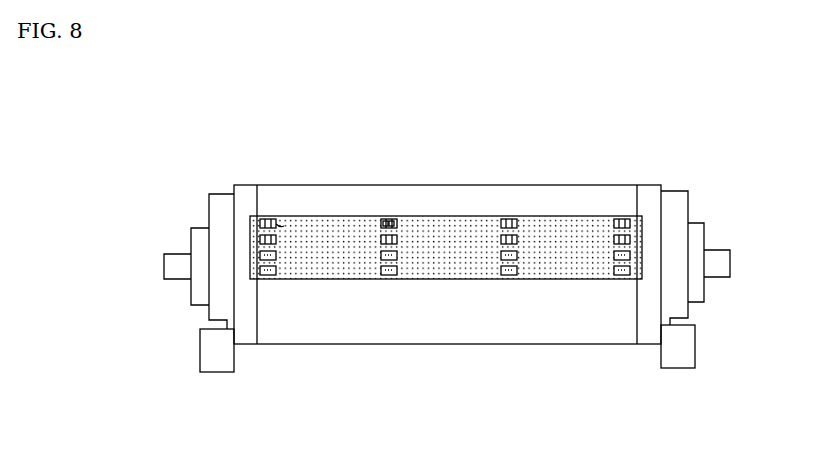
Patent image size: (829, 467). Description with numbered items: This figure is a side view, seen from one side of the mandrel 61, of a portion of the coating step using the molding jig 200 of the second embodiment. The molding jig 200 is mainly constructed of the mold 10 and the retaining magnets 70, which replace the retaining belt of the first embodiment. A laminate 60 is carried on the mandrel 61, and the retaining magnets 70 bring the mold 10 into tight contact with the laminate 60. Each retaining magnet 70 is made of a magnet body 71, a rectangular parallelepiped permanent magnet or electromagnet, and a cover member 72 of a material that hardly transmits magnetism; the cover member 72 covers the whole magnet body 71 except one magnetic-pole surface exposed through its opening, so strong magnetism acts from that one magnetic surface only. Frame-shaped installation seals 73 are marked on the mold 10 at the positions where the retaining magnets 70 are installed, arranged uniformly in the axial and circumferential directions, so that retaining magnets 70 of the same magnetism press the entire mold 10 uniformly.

The molding jig 200 is at (481, 134).
The laminate 60 is at (377, 333).
The mandrel 61 is at (239, 203).
The mold 10 is at (582, 229).
The retaining magnet 70 is at (268, 219).
The magnet body 71 is at (387, 220).
The cover member 72 is at (390, 220).
The installation seal 73 is at (282, 225).